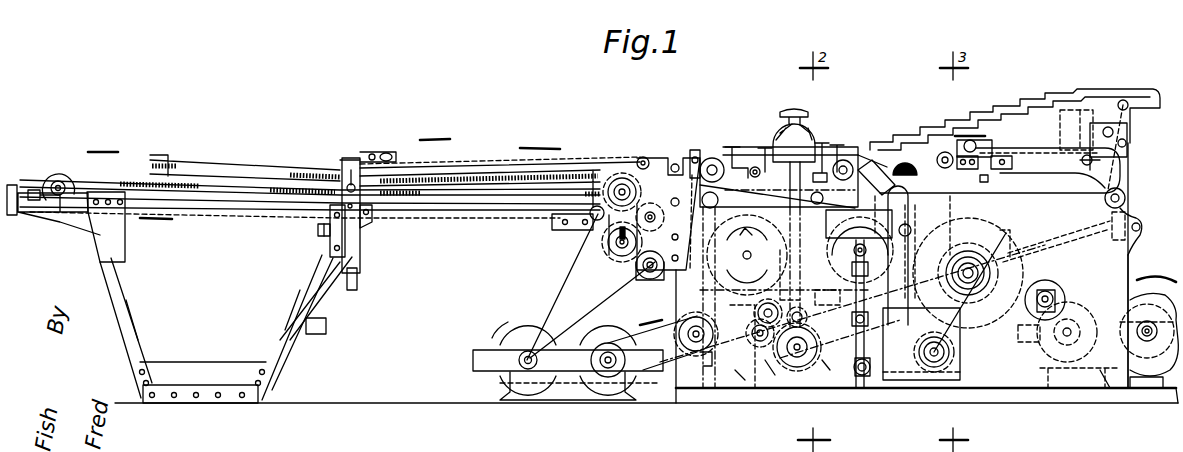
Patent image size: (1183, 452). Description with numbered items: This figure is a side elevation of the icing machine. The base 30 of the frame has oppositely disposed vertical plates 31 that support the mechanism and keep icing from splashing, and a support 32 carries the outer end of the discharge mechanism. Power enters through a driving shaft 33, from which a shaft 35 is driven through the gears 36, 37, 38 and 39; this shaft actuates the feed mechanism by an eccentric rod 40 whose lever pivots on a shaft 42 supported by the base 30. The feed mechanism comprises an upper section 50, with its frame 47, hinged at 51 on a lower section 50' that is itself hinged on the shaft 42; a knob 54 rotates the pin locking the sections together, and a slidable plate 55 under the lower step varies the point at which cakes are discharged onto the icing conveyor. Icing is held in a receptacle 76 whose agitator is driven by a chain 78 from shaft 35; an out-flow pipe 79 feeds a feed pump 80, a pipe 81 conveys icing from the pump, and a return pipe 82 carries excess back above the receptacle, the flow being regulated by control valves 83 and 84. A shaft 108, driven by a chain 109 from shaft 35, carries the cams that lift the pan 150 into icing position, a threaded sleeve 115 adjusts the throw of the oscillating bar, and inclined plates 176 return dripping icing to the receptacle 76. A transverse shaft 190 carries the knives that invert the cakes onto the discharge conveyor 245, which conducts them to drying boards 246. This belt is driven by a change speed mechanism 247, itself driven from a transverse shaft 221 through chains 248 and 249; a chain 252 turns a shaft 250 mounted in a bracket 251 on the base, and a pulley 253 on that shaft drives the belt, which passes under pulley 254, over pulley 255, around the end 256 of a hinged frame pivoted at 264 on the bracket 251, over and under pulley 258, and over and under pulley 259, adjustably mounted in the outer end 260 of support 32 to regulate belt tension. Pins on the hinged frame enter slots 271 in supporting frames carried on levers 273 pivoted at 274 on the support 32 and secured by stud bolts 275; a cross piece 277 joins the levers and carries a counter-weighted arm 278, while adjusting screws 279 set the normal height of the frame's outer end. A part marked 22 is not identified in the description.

The bolt 22 is at (973, 140).
The base 30 is at (1022, 390).
The vertical plates 31 is at (1130, 248).
The support 32 is at (207, 368).
The driving shaft 33 is at (1149, 326).
The shaft 35 is at (982, 254).
The gear 36 is at (1108, 390).
The gear 37 is at (1082, 312).
The gear 38 is at (1058, 290).
The gear 39 is at (925, 235).
The eccentric rod 40 is at (1053, 250).
The shaft 42 is at (1105, 199).
The frame of the upper section 47 is at (1108, 95).
The upper section 50 is at (1015, 110).
The lower section 50' is at (1000, 170).
The hinge 51 is at (1128, 143).
The operating knob 54 is at (980, 147).
The plate 55 is at (862, 155).
The receptacle 76 is at (848, 314).
The chain 78 is at (945, 252).
The out-flow pipe 79 is at (853, 367).
The feed pump 80 is at (962, 369).
The pipe 81 is at (916, 354).
The return pipe 82 is at (962, 292).
The control valve 83 is at (859, 246).
The control valve 84 is at (899, 229).
The shaft 108 is at (797, 372).
The chain 109 is at (822, 362).
The threaded sleeve 115 is at (740, 380).
The pan 150 is at (805, 160).
The inclined plates 176 is at (752, 235).
The transverse shaft 190 is at (698, 150).
The transverse shaft 221 is at (770, 372).
The discharge conveyor 245 is at (128, 166).
The drying boards 246 is at (214, 162).
The change speed mechanism 247 is at (566, 374).
The chain 248 is at (705, 366).
The chain 249 is at (678, 334).
The shaft 250 is at (612, 260).
The bracket 251 is at (647, 157).
The chain 252 is at (547, 300).
The pulley 253 is at (590, 243).
The pulley 254 is at (648, 281).
The pulley 255 is at (675, 157).
The end of hinged frame 256 is at (368, 154).
The pulley 258 is at (610, 182).
The pulley 259 is at (57, 172).
The outer end of support 260 is at (73, 222).
The pivot 264 is at (642, 166).
The slots 271 is at (388, 153).
The levers 273 is at (330, 242).
The pivot 274 is at (368, 226).
The stud bolts 275 is at (343, 172).
The cross piece 277 is at (360, 278).
The counter-weighted arm 278 is at (330, 308).
The adjusting screws 279 is at (318, 232).